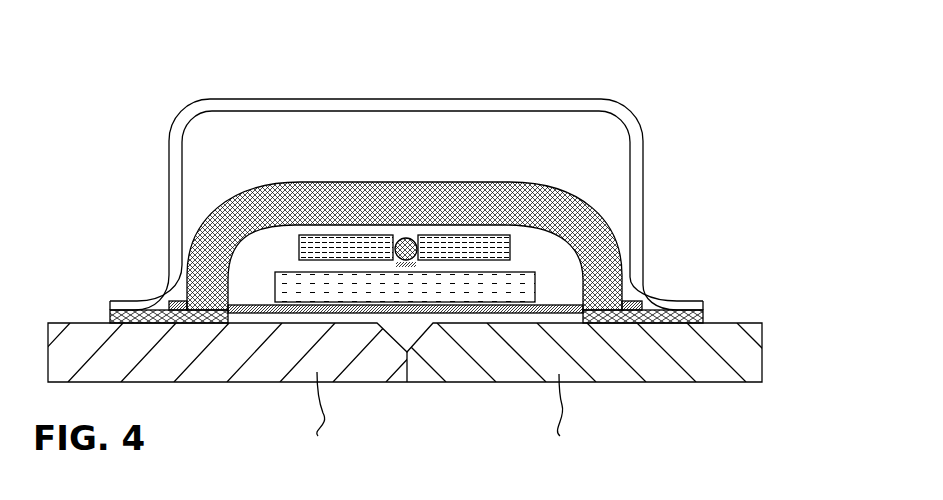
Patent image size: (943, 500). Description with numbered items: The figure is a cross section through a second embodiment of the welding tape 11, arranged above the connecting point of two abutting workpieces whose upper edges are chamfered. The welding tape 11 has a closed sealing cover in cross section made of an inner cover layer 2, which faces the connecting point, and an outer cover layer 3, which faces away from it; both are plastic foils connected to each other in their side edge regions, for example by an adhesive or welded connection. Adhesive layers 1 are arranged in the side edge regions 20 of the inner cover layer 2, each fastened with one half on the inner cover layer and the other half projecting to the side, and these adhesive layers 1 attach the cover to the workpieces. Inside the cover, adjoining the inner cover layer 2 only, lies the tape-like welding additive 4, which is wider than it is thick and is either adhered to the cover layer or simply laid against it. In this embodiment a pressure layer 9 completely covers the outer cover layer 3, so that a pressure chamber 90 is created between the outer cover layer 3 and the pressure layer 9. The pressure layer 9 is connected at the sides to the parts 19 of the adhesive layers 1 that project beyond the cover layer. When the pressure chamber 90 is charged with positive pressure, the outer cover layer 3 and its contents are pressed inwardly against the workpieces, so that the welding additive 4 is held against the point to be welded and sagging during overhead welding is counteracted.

The welding tape 11 is at (156, 87).
The adhesive layers 1 is at (704, 318).
The inner cover layer 2 is at (461, 313).
The outer cover layer 3 is at (389, 182).
The welding additive 4 is at (290, 278).
The pressure layer 9 is at (565, 105).
The pressure chamber 90 is at (621, 196).
The parts of the adhesive layers projecting beyond the cover layer 19 is at (135, 301).
The side edge regions of the inner cover layer 20 is at (613, 292).